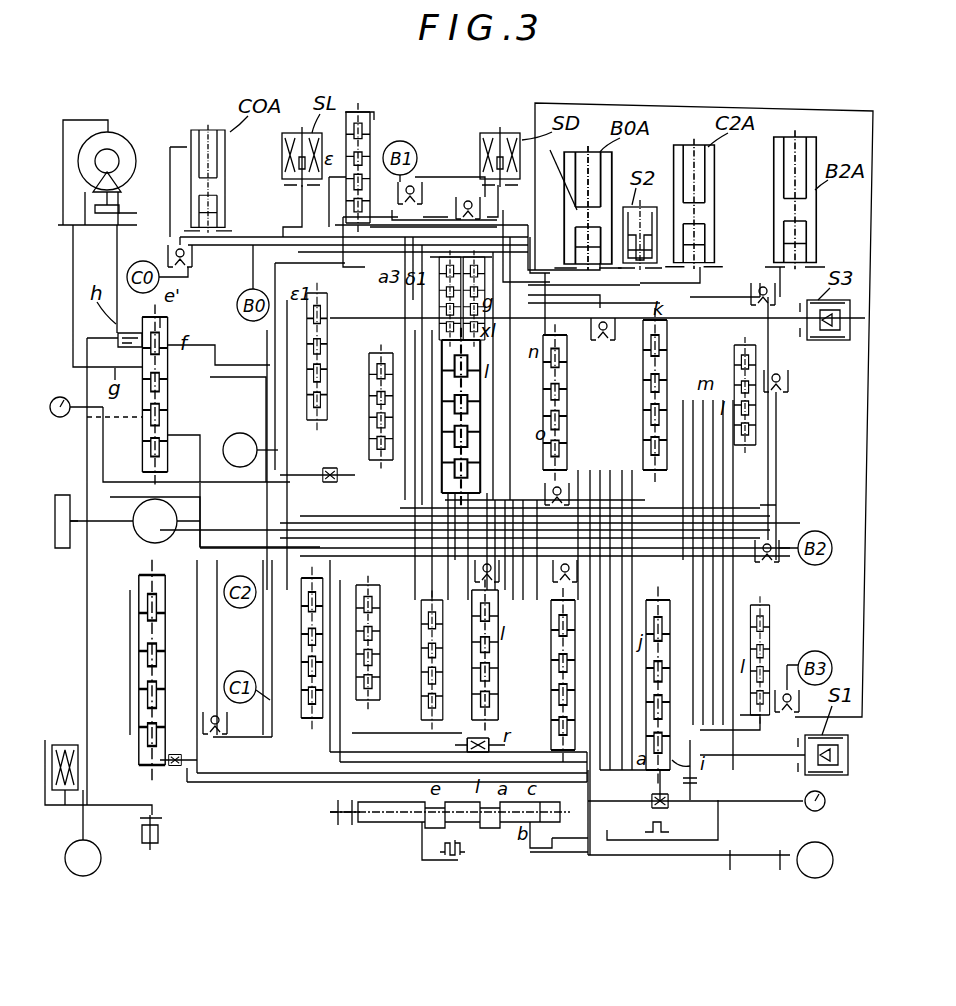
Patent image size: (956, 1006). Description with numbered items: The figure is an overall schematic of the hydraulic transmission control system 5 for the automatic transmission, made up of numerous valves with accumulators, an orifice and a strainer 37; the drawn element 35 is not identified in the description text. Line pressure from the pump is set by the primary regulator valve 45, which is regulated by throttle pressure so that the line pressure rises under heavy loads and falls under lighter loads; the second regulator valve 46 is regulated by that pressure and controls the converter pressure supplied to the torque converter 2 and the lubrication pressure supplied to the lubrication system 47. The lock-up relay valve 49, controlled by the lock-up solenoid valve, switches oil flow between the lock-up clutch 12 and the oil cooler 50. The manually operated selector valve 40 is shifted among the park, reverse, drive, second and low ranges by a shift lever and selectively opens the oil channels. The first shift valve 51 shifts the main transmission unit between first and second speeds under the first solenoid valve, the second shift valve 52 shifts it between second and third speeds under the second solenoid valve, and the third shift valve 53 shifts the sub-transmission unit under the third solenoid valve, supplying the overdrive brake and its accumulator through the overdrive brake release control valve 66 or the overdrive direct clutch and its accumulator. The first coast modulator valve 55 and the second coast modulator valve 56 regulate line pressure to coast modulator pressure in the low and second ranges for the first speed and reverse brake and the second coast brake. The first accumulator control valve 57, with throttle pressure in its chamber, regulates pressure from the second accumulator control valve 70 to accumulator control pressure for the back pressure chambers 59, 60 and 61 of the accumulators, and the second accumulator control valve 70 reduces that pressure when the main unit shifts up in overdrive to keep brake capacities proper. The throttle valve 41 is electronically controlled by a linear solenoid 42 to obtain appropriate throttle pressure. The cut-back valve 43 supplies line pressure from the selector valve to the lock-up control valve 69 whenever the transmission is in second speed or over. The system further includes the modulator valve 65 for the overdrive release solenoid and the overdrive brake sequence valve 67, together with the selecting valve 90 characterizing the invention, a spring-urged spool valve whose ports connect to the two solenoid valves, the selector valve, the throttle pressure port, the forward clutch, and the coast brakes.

The torque converter 2 is at (128, 140).
The hydraulic transmission control system 5 is at (28, 208).
The lock-up clutch 12 is at (63, 132).
The oil pump 35 is at (165, 543).
The strainer 37 is at (55, 517).
The manually operated selector valve 40 is at (405, 838).
The throttle valve 41 is at (440, 350).
The linear solenoid 42 is at (478, 277).
The cut-back valve 43 is at (380, 350).
The primary regulator valve 45 is at (132, 575).
The second regulator valve 46 is at (320, 292).
The lubrication system 47 is at (240, 433).
The lock-up relay valve 49 is at (172, 300).
The oil cooler 50 is at (98, 873).
The first shift valve 51 is at (662, 600).
The second shift valve 52 is at (672, 338).
The third shift valve 53 is at (558, 348).
The first coast modulator valve 55 is at (770, 622).
The second coast modulator valve 56 is at (760, 372).
The first accumulator control valve 57 is at (490, 598).
The back pressure chamber 59 is at (578, 220).
The back pressure chamber 60 is at (745, 158).
The back pressure chamber 61 is at (745, 158).
The SD modulator valve 65 is at (362, 595).
The B0 release control valve 66 is at (433, 600).
The B0 sequence valve 67 is at (610, 325).
The lock-up control valve 69 is at (306, 592).
The second accumulator control valve 70 is at (550, 600).
The selecting valve 90 is at (366, 110).